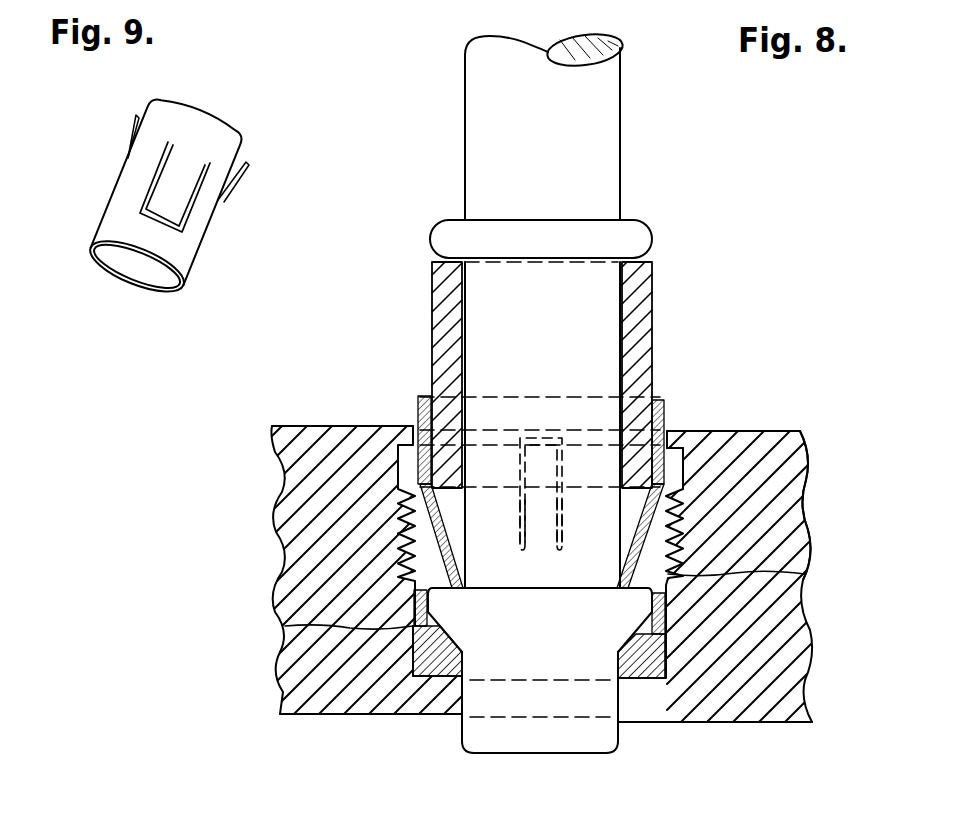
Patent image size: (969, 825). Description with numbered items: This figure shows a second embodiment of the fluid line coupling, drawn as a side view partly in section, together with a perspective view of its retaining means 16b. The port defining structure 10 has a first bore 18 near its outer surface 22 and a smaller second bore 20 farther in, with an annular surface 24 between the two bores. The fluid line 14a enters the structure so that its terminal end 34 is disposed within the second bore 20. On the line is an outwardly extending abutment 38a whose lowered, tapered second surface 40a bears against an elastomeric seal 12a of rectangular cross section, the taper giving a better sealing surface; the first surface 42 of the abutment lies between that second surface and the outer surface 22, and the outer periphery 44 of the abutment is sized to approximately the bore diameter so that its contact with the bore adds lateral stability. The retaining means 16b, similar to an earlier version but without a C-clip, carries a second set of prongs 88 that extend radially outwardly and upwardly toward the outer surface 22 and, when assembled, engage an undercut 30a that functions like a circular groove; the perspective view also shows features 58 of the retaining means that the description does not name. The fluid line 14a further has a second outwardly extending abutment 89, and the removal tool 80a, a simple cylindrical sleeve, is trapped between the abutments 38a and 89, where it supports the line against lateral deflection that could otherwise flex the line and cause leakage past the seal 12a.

In FIG. 8, the port defining structure 10 is at (280, 518).
In FIG. 8, the elastomeric seal 12a is at (405, 714).
In FIG. 8, the fluid line 14a is at (612, 118).
In FIG. 9, the retaining means 16b is at (252, 117).
In FIG. 8, the retaining means 16b is at (457, 513).
In FIG. 8, the first bore 18 is at (806, 575).
In FIG. 8, the second bore 20 is at (480, 745).
In FIG. 8, the outer surface 22 is at (318, 426).
In FIG. 8, the annular surface 24 is at (660, 700).
In FIG. 8, the undercut 30a is at (683, 445).
In FIG. 8, the terminal end 34 is at (575, 745).
In FIG. 8, the outwardly extending abutment 38a is at (574, 621).
In FIG. 8, the second surface 40a is at (412, 626).
In FIG. 8, the first surface 42 is at (452, 582).
In FIG. 8, the outer periphery 44 is at (436, 600).
In FIG. 9, the slot 58 is at (163, 193).
In FIG. 8, the slot 58 is at (448, 556).
In FIG. 8, the removal tool 80a is at (645, 297).
In FIG. 9, the second set of prongs 88 is at (135, 122).
In FIG. 8, the second set of prongs 88 is at (542, 452).
In FIG. 8, the second outwardly extending abutment 89 is at (648, 242).